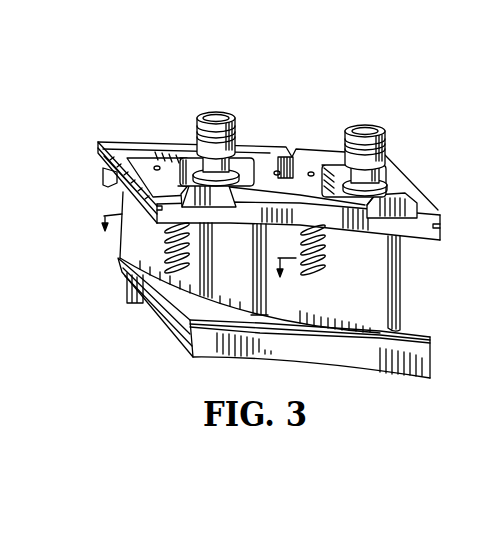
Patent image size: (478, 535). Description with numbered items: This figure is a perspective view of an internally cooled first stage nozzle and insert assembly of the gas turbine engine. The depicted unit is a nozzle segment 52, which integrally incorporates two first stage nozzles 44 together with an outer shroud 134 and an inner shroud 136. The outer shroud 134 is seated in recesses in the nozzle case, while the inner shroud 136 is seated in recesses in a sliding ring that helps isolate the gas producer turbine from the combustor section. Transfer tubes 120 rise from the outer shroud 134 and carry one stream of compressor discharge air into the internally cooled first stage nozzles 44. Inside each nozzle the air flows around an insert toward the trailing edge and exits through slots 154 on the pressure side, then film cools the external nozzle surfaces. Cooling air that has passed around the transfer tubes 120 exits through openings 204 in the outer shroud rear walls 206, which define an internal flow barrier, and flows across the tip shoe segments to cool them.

The nozzle segment 52 is at (244, 204).
The transfer tube 120 is at (197, 125).
The opening 204 is at (312, 172).
The outer shroud rear wall 206 is at (110, 142).
The outer shroud 134 is at (110, 178).
The inner shroud 136 is at (131, 298).
The slot 154 is at (146, 242).
The first stage nozzle 44 is at (266, 299).